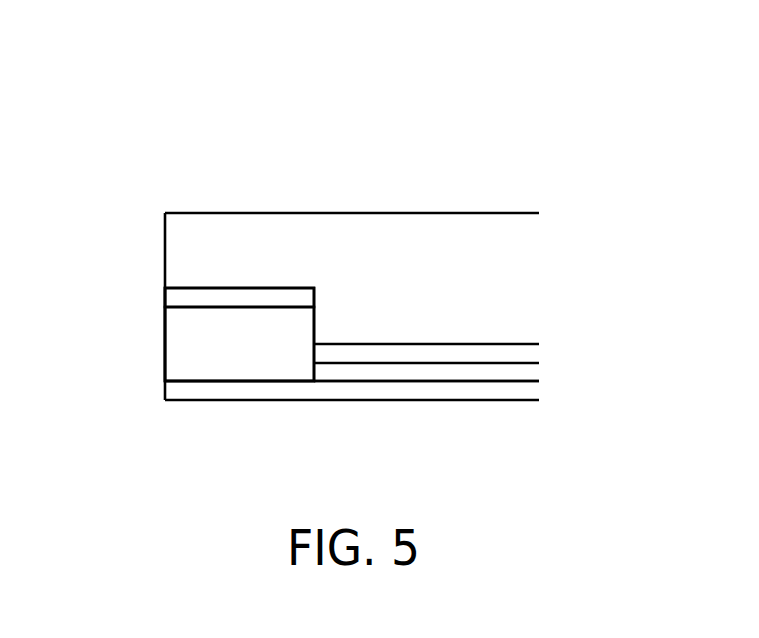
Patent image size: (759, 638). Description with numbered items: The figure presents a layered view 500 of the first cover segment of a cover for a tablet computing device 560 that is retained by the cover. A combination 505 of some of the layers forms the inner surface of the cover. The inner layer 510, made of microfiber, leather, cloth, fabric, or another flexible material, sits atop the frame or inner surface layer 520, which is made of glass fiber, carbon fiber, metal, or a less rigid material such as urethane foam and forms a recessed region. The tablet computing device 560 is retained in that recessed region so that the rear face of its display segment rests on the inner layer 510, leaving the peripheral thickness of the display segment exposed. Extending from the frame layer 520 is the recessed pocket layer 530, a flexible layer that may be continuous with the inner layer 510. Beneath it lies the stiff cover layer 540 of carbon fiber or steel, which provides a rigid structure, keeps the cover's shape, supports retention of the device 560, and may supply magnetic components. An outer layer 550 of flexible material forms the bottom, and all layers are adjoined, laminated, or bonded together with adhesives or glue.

The layered view 500 is at (503, 62).
The combination of layers 505 is at (143, 287).
The inner layer 510 is at (205, 292).
The frame or inner surface layer 520 is at (238, 354).
The recessed pocket layer 530 is at (543, 353).
The stiff cover layer 540 is at (544, 374).
The outer layer 550 is at (188, 392).
The tablet computing device 560 is at (461, 246).